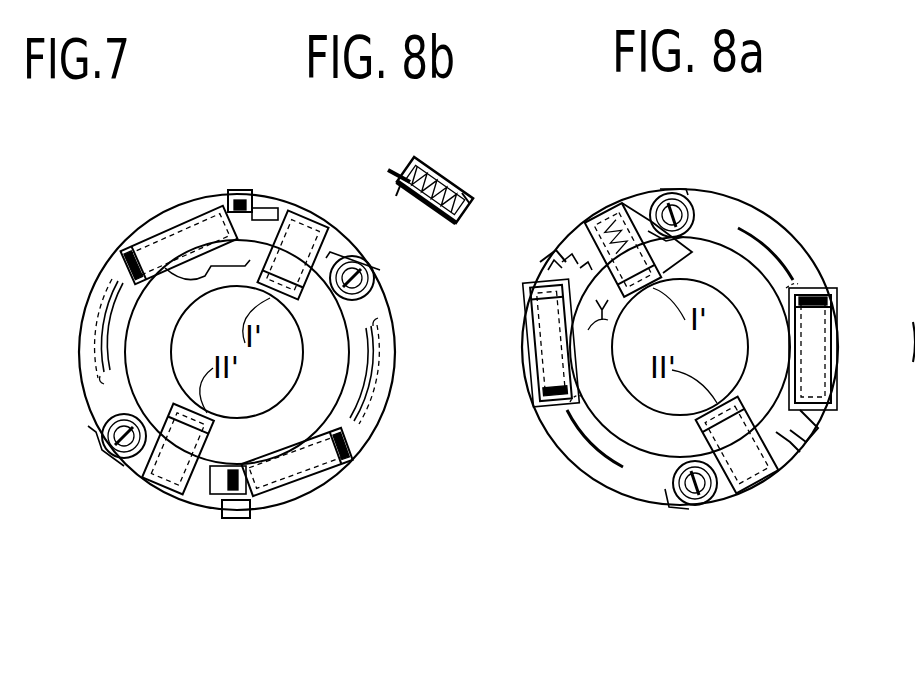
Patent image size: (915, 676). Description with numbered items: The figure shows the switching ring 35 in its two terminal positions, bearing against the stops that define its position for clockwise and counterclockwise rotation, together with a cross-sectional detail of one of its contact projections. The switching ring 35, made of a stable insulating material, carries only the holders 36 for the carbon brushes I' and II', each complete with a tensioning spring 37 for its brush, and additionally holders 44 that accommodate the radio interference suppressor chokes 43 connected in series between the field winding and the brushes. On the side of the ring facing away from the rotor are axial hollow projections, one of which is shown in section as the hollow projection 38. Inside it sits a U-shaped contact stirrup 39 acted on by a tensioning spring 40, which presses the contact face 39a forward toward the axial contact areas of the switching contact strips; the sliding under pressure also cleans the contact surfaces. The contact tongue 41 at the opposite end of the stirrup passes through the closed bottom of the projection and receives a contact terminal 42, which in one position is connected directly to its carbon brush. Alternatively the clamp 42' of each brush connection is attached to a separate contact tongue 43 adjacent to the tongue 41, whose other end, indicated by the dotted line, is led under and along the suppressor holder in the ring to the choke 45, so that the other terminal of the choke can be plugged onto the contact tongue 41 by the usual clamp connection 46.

In FIG. 7, the switching ring 35 is at (265, 186).
In FIG. 8a, the switching ring 35 is at (732, 192).
In FIG. 7, the holder 36 is at (133, 250).
In FIG. 7, the tensioning spring 37 is at (378, 283).
In FIG. 8a, the tensioning spring 37 is at (670, 198).
In FIG. 8b, the hollow projection 38 is at (420, 168).
In FIG. 8b, the contact stirrup 39 is at (398, 188).
In FIG. 8b, the contact face 39a is at (462, 196).
In FIG. 8b, the tensioning spring 40 is at (420, 178).
In FIG. 8b, the contact tongue 41 is at (395, 175).
In FIG. 7, the contact terminal (clamp) 42 is at (237, 361).
In FIG. 8a, the contact terminal (clamp) 42' is at (712, 387).
In FIG. 7, the radio interference suppressor choke 43 is at (167, 222).
In FIG. 8a, the radio interference suppressor choke 43 is at (828, 300).
In FIG. 7, the holder 44 is at (298, 496).
In FIG. 8a, the holder 44 is at (520, 334).
In FIG. 8a, the choke 45 is at (826, 320).
In FIG. 8a, the clamp connection 46 is at (800, 450).